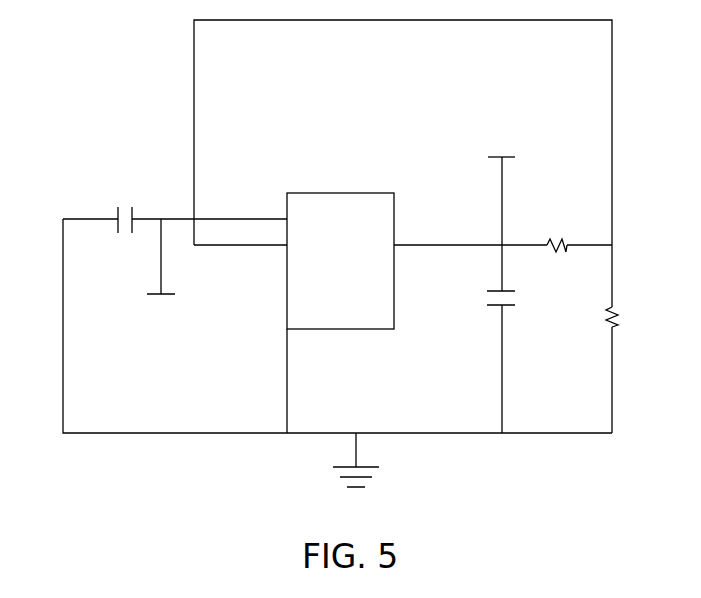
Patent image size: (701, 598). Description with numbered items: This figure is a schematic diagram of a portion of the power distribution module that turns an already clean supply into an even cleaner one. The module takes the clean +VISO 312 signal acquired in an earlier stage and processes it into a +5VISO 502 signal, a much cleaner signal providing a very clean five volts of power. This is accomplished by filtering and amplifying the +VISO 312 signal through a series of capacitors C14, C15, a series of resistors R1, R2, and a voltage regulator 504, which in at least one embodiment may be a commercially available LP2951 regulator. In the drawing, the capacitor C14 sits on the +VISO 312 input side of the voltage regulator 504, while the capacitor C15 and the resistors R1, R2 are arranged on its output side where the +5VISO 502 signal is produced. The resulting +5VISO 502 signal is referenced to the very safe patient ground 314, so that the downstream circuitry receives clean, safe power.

The +5VISO signal 502 is at (500, 117).
The voltage regulator 504 is at (359, 311).
The +VISO signal 312 is at (163, 333).
The patient ground 314 is at (356, 453).
The capacitor C14 is at (124, 203).
The capacitor C15 is at (525, 296).
The resistor R1 is at (558, 230).
The resistor R2 is at (632, 316).